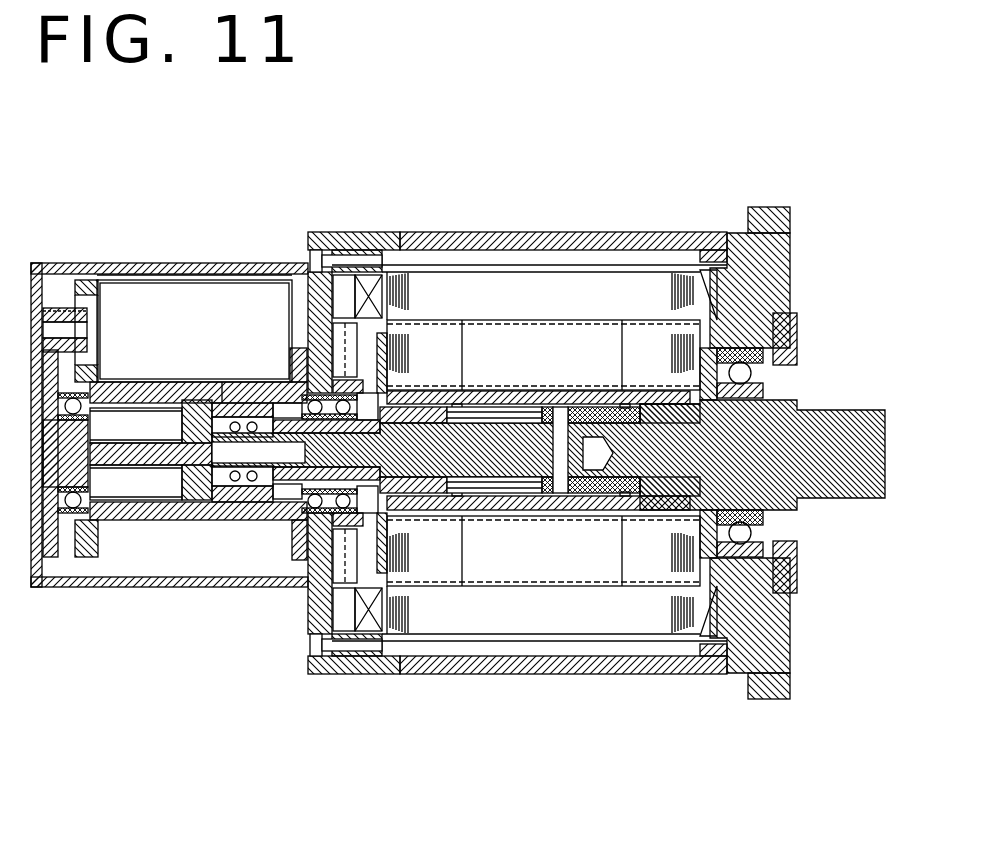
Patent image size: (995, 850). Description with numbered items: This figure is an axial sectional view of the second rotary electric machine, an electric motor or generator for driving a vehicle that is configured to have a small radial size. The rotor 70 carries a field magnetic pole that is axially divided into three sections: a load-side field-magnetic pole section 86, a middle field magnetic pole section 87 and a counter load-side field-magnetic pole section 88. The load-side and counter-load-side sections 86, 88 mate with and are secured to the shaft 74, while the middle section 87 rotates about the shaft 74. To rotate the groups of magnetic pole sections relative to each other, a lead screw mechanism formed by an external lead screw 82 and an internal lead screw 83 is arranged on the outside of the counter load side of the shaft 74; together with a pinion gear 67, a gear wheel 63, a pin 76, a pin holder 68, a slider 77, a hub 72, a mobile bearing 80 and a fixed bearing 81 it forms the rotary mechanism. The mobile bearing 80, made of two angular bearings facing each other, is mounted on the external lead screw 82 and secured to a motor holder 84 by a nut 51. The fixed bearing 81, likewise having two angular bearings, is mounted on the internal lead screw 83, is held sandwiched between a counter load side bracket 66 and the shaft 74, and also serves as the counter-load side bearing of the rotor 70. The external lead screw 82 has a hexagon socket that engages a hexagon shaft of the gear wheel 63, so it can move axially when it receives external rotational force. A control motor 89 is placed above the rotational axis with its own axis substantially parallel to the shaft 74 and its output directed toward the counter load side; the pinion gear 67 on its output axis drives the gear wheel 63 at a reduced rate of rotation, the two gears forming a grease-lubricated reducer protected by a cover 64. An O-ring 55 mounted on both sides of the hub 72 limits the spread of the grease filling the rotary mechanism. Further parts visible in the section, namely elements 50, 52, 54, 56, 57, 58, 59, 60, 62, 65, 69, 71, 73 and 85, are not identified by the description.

The rotor 50 is at (558, 280).
The nut 51 is at (298, 492).
The shaft sleeve 52 is at (300, 500).
The rotor yoke 54 is at (483, 265).
The O-ring 55 is at (628, 392).
The end flange tab 56 is at (783, 255).
The motor housing 57 is at (445, 250).
The bearing 58 is at (782, 340).
The pump housing wall 59 is at (100, 385).
The coil 60 is at (357, 592).
The bearing cover 62 is at (782, 563).
The gear wheel 63 is at (83, 368).
The cover 64 is at (65, 592).
The sensor 65 is at (345, 527).
The counter load side bracket 66 is at (355, 235).
The pinion gear 67 is at (63, 308).
The pin holder 68 is at (513, 513).
The bearing 69 is at (207, 478).
The rotor 70 is at (685, 348).
The bearing 71 is at (755, 523).
The hub 72 is at (560, 463).
The screw 73 is at (353, 652).
The shaft 74 is at (763, 400).
The pin 76 is at (518, 463).
The slider 77 is at (600, 492).
The mobile bearing 80 is at (265, 468).
The fixed bearing 81 is at (325, 512).
The external lead screw 82 is at (222, 390).
The internal lead screw 83 is at (148, 393).
The motor holder 84 is at (86, 293).
The spacer ring 85 is at (347, 645).
The load-side field-magnetic pole section 86 is at (663, 563).
The middle field magnetic pole section 87 is at (538, 562).
The counter load-side field-magnetic pole section 88 is at (437, 562).
The control motor 89 is at (210, 323).